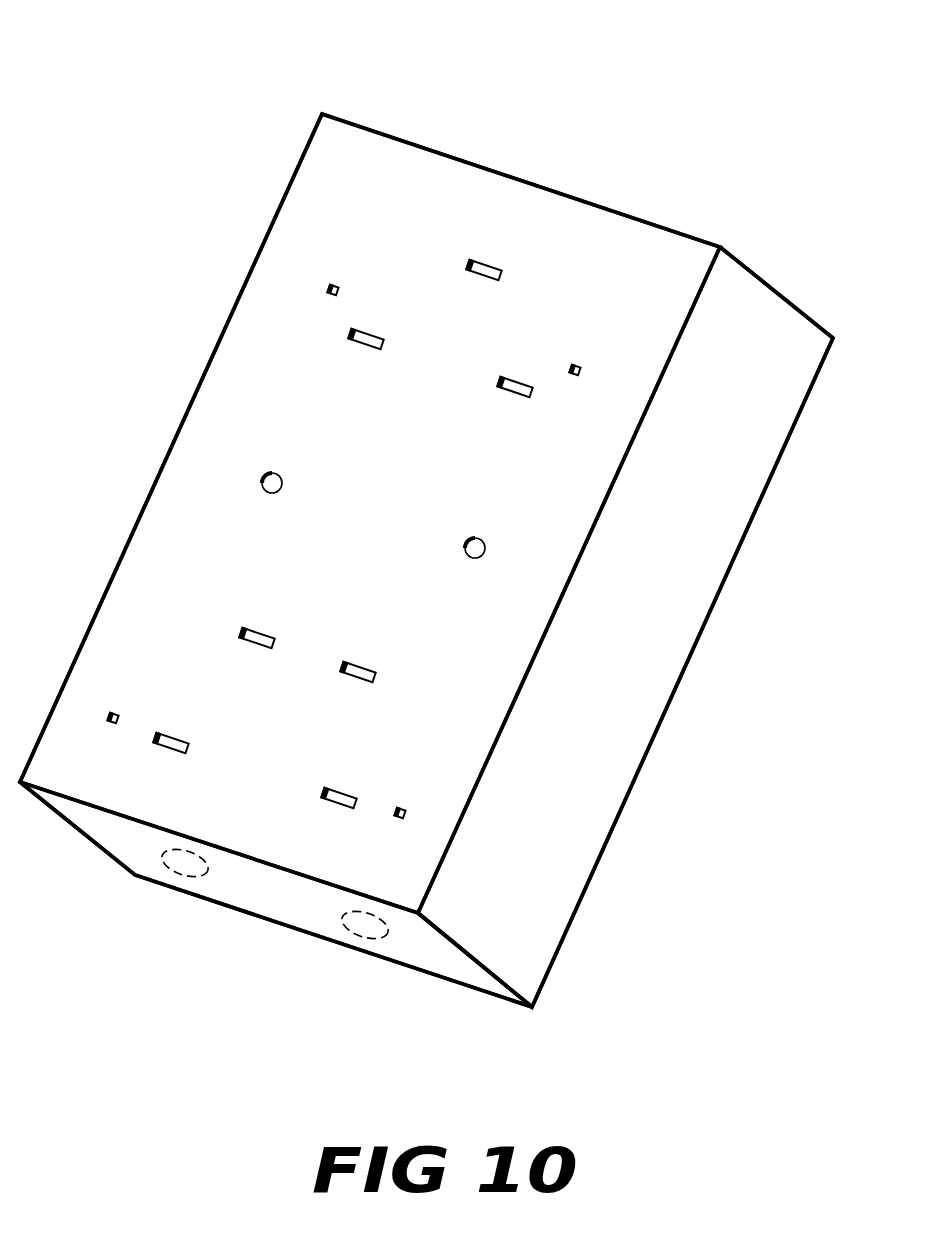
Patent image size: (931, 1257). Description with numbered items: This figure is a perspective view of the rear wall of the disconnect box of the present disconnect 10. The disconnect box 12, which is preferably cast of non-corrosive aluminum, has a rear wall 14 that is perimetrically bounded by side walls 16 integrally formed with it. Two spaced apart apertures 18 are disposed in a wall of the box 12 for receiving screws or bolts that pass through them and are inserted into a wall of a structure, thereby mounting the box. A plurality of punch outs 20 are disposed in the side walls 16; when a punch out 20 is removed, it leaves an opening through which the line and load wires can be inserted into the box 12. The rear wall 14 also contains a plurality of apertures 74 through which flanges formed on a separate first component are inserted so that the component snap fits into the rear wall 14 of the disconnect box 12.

The disconnect 10 is at (203, 56).
The disconnect box 12 is at (775, 258).
The rear wall 14 is at (402, 515).
The side walls 16 is at (668, 663).
The apertures 18 is at (264, 490).
The punch outs 20 is at (185, 866).
The apertures 74 is at (498, 278).